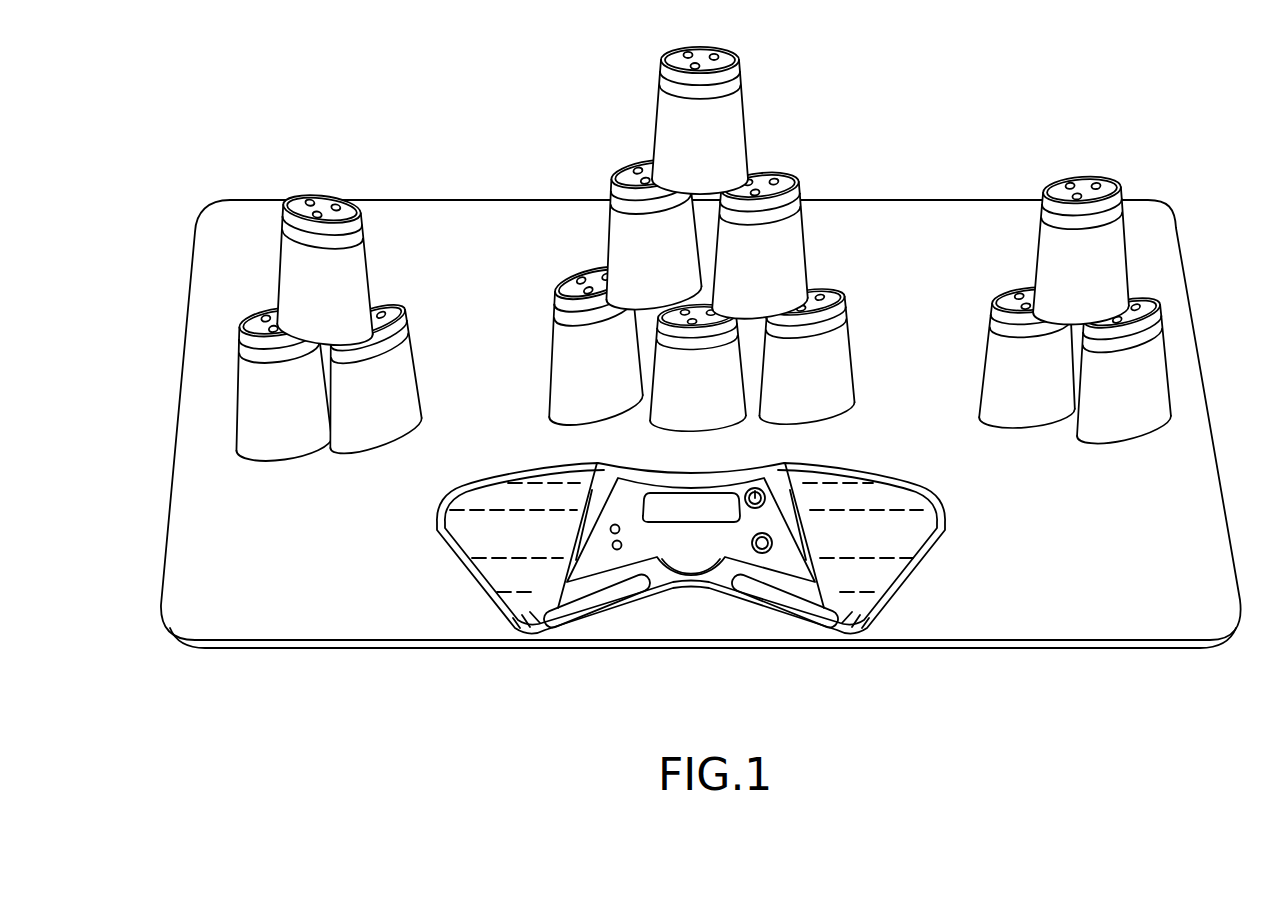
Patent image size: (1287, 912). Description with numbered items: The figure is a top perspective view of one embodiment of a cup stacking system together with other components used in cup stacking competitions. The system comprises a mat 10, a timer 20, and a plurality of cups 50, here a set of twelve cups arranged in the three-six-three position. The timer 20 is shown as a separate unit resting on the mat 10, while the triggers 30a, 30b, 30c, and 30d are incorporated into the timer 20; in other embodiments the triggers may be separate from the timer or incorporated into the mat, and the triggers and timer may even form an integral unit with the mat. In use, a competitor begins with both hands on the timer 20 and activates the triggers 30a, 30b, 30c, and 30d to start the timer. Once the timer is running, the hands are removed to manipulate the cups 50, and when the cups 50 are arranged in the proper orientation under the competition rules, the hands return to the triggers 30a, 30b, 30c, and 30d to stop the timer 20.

The mat 10 is at (192, 545).
The timer 20 is at (718, 587).
The trigger 30a is at (453, 522).
The trigger 30b is at (925, 508).
The trigger 30c is at (607, 602).
The trigger 30d is at (790, 612).
The cups 50 is at (623, 233).